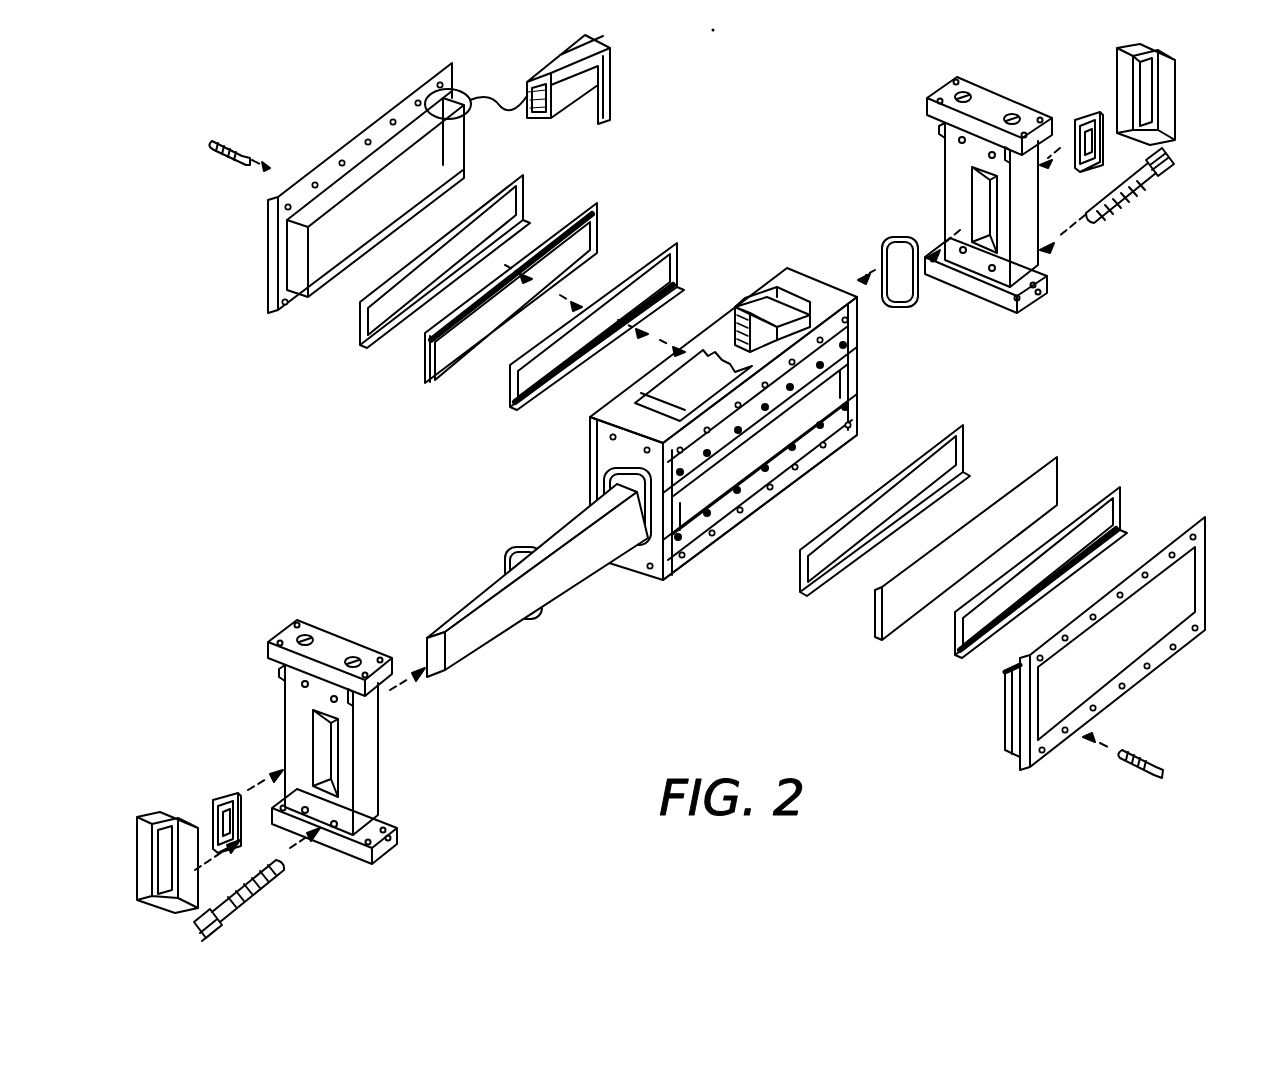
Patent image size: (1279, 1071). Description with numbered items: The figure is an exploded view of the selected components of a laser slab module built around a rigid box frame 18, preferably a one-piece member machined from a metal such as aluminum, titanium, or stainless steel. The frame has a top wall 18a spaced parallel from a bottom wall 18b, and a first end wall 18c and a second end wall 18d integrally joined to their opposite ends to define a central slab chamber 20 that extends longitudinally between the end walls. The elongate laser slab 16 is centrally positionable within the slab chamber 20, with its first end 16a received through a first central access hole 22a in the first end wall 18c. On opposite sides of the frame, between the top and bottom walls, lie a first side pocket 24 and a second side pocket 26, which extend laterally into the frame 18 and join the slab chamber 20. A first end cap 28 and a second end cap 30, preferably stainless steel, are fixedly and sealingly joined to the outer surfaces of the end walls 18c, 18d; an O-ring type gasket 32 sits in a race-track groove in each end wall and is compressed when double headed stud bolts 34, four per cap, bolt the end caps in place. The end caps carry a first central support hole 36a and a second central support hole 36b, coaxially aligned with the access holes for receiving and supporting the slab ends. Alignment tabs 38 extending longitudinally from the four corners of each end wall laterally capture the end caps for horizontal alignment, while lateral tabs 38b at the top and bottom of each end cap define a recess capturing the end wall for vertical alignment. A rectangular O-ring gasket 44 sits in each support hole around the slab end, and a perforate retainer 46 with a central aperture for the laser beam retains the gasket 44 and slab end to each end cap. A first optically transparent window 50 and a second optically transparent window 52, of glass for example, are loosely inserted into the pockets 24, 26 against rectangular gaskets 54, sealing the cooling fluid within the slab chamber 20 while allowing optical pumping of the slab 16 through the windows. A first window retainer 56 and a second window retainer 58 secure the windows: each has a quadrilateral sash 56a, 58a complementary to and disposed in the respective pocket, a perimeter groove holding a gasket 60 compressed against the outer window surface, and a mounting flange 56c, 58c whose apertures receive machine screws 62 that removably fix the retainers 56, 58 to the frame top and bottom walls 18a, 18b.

The laser slab 16 is at (535, 606).
The first end of the laser slab 16a is at (456, 660).
The box frame 18 is at (727, 419).
The top wall 18a is at (676, 373).
The bottom wall 18b is at (720, 532).
The first end wall 18c is at (658, 575).
The second end wall 18d is at (838, 376).
The slab chamber 20 is at (833, 432).
The first central access hole 22a is at (632, 553).
The first side pocket 24 is at (850, 356).
The second side pocket 26 is at (742, 318).
The first end cap 28 is at (309, 687).
The second end cap 30 is at (970, 162).
The O-ring type gasket 32 is at (508, 562).
The double headed stud bolt 34 is at (1128, 196).
The first central support hole 36a is at (322, 735).
The second central support hole 36b is at (975, 200).
The alignment tab 38 is at (588, 437).
The lateral tab 38b is at (1000, 292).
The gasket 44 is at (1104, 142).
The perforate retainer 46 is at (1178, 102).
The first optically transparent window 50 is at (1060, 480).
The second optically transparent window 52 is at (422, 378).
The rectangular gasket 54 is at (512, 408).
The first window retainer 56 is at (1102, 639).
The sash of first window retainer 56a is at (1008, 712).
The mounting flange of first window retainer 56c is at (1165, 654).
The second window retainer 58 is at (355, 187).
The sash of second window retainer 58a is at (448, 168).
The mounting flange of second window retainer 58c is at (380, 130).
The gasket 60 is at (362, 340).
The machine screw 62 is at (245, 143).